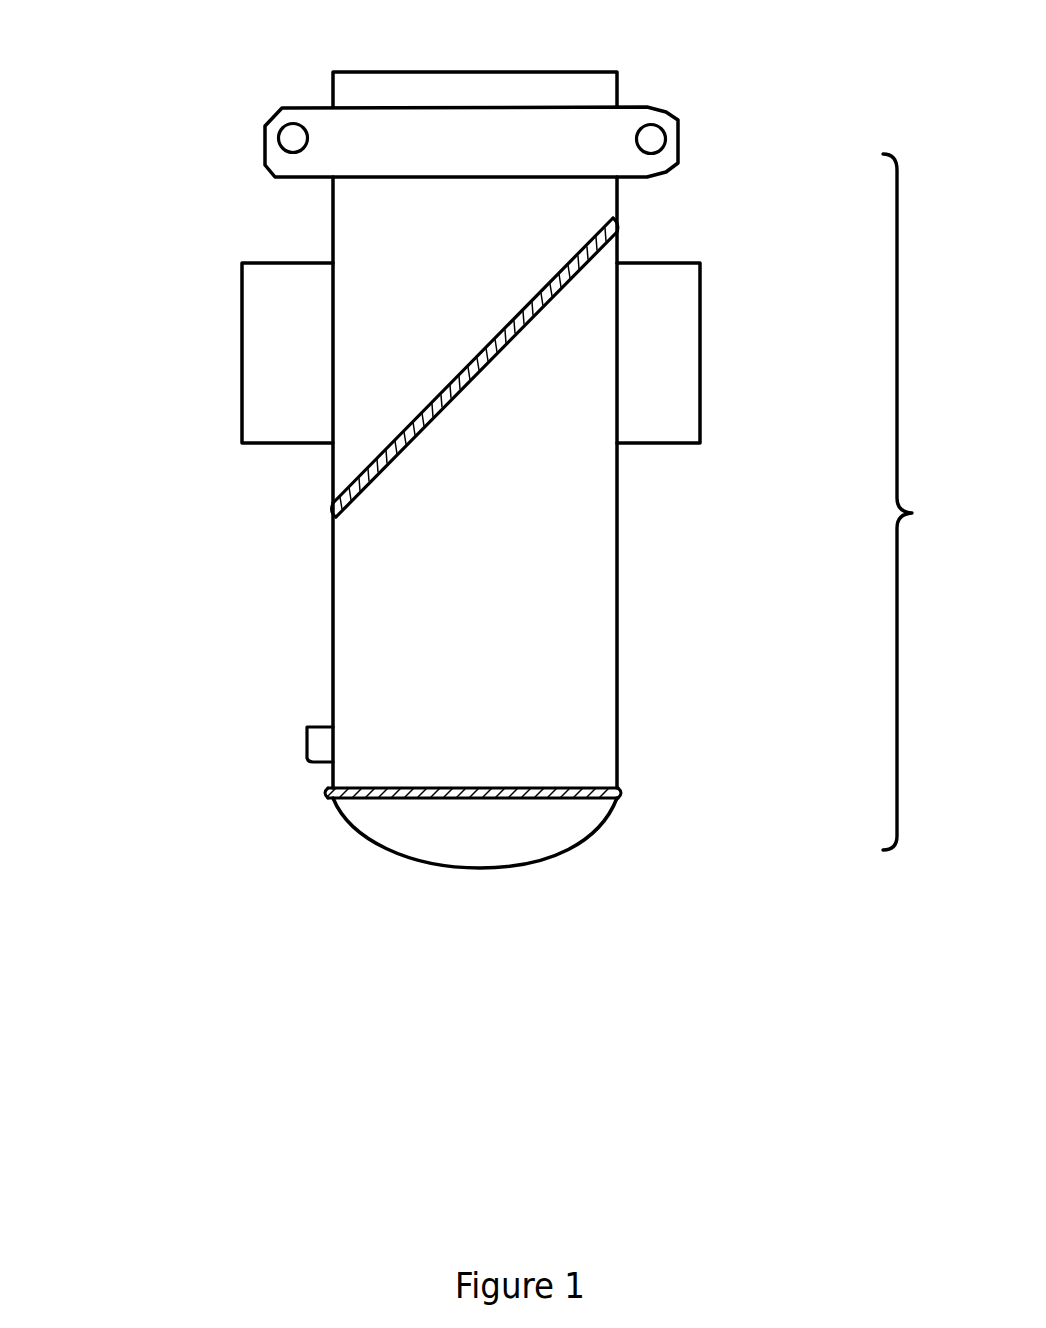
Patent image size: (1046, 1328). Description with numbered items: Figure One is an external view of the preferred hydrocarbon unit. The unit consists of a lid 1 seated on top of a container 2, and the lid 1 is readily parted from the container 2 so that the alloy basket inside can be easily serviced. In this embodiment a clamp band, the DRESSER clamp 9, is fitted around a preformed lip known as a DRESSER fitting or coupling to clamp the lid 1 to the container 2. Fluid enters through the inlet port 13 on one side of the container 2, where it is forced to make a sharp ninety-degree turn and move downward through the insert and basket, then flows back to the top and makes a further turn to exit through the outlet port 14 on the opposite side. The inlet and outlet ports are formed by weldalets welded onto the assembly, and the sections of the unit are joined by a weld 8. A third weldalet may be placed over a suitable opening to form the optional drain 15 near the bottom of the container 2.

The lid 1 is at (597, 87).
The container 2 is at (921, 502).
The weld 8 is at (637, 220).
The DRESSER clamp 9 is at (680, 133).
The inlet port 13 is at (250, 385).
The outlet port 14 is at (700, 328).
The drain 15 is at (307, 745).